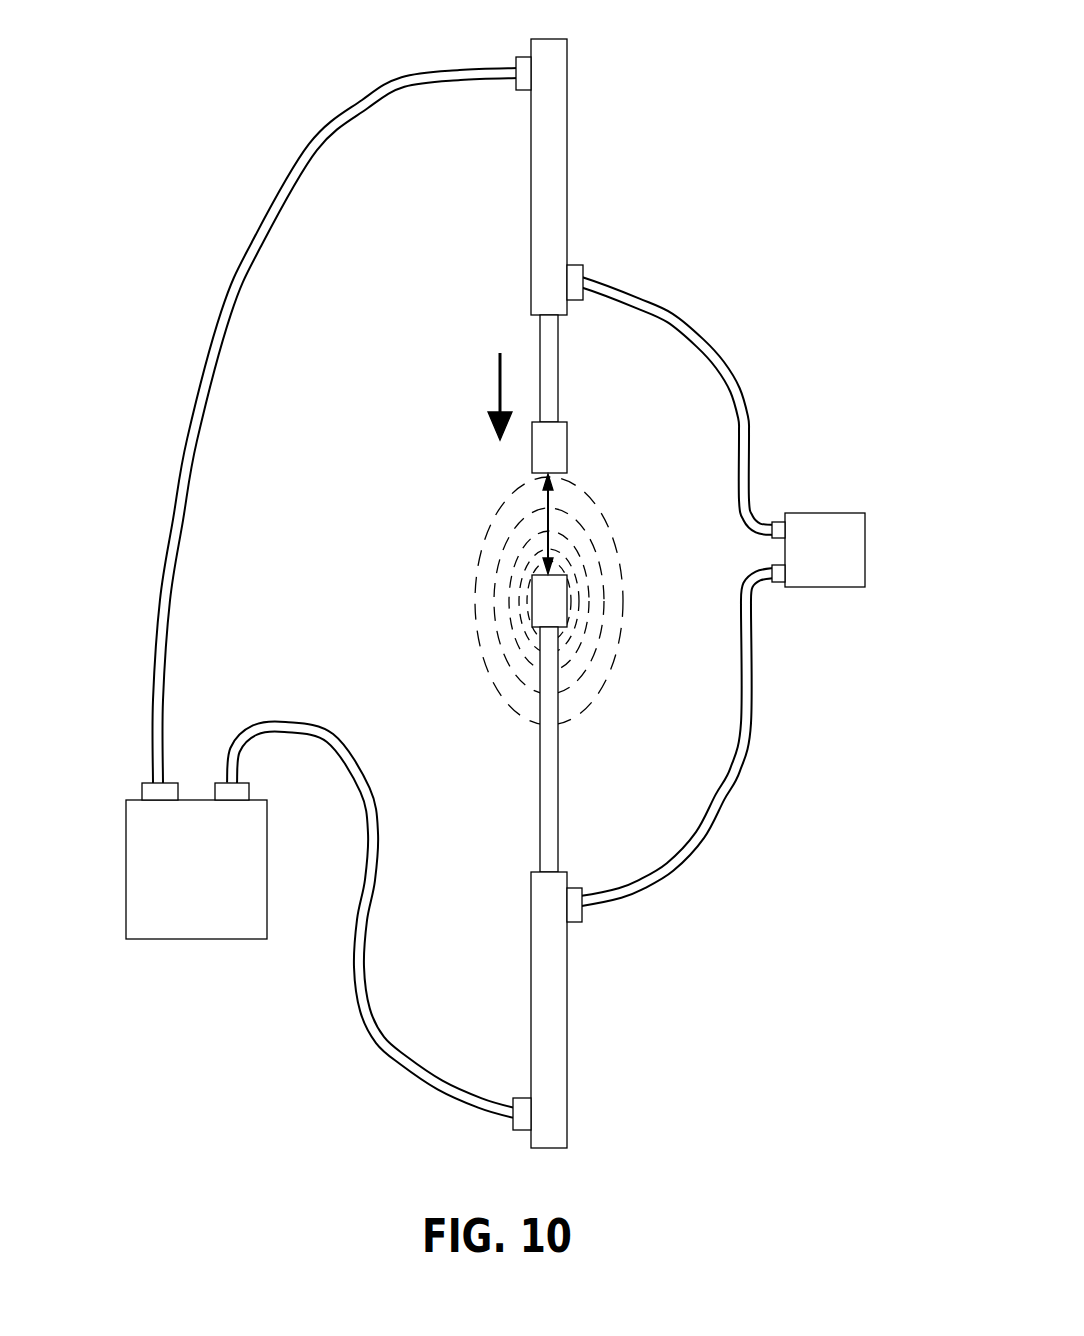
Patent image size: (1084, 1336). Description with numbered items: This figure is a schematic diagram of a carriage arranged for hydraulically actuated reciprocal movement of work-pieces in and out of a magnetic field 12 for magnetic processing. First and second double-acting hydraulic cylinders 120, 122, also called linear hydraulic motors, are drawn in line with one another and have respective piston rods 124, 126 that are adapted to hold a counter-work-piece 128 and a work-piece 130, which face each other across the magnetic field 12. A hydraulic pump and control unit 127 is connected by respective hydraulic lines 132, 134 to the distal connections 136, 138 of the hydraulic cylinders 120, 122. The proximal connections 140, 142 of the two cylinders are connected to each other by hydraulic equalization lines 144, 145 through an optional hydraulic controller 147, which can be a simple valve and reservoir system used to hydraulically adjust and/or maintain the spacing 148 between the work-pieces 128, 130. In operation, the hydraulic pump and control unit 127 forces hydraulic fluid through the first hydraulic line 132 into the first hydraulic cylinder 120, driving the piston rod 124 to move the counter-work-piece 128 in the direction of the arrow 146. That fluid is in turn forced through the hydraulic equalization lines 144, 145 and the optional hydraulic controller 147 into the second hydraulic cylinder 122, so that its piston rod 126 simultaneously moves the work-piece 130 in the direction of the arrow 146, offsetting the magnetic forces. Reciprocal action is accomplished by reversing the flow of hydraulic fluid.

The magnetic field 12 is at (610, 532).
The first double-acting hydraulic cylinder 120 is at (567, 133).
The second double-acting hydraulic cylinder 122 is at (567, 1033).
The piston rod 124 is at (558, 380).
The piston rod 126 is at (558, 815).
The hydraulic pump and control unit 127 is at (212, 885).
The counter-work-piece 128 is at (567, 442).
The work-piece 130 is at (567, 598).
The first hydraulic line 132 is at (222, 340).
The second hydraulic line 134 is at (362, 1022).
The distal connection 136 is at (517, 55).
The distal connection 138 is at (521, 1132).
The proximal connection 140 is at (572, 263).
The proximal connection 142 is at (578, 922).
The hydraulic equalization line 144 is at (752, 672).
The hydraulic equalization line 145 is at (717, 355).
The arrow 146 is at (497, 379).
The hydraulic controller 147 is at (803, 513).
The spacing 148 is at (548, 522).